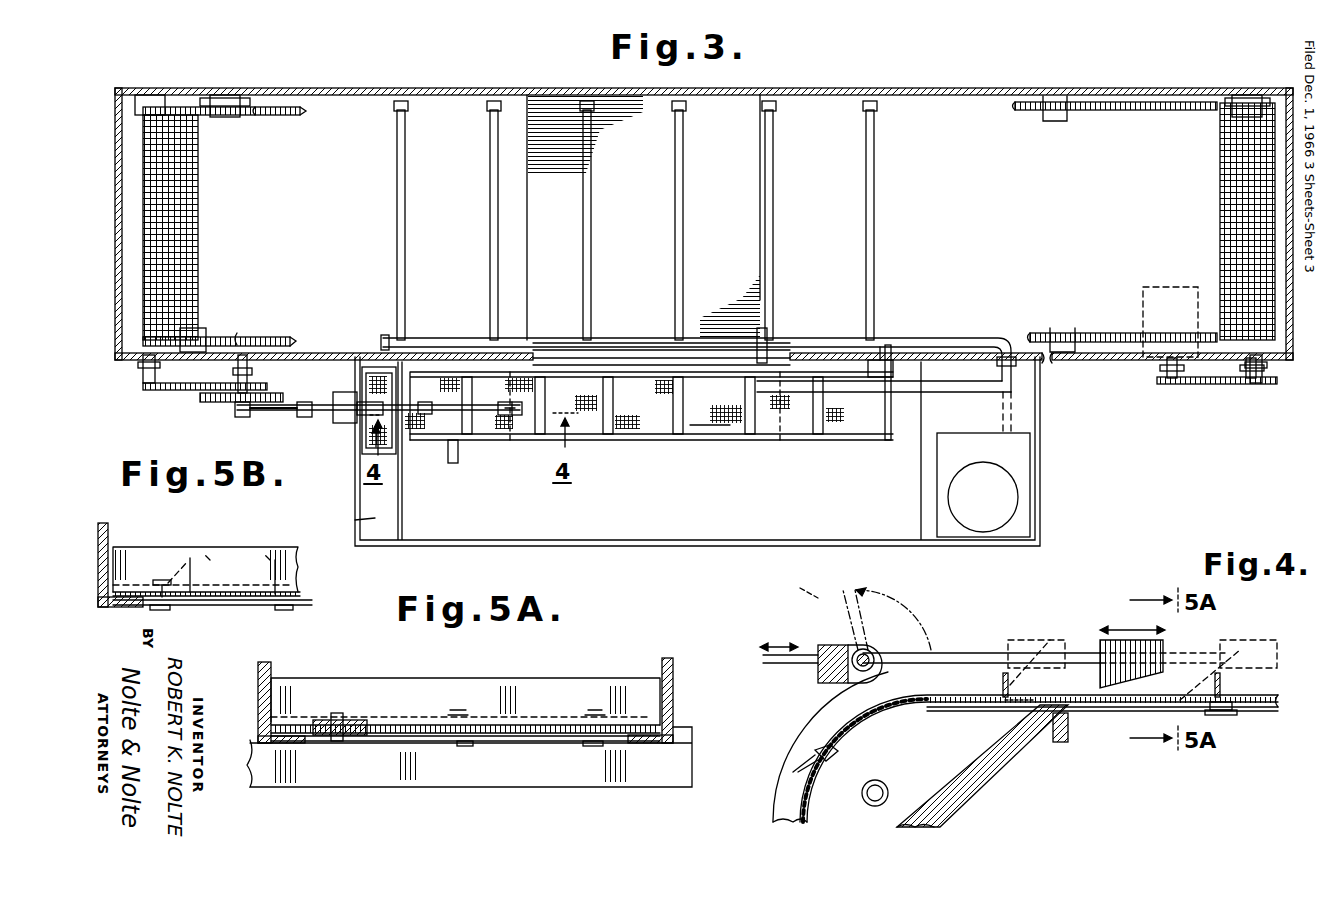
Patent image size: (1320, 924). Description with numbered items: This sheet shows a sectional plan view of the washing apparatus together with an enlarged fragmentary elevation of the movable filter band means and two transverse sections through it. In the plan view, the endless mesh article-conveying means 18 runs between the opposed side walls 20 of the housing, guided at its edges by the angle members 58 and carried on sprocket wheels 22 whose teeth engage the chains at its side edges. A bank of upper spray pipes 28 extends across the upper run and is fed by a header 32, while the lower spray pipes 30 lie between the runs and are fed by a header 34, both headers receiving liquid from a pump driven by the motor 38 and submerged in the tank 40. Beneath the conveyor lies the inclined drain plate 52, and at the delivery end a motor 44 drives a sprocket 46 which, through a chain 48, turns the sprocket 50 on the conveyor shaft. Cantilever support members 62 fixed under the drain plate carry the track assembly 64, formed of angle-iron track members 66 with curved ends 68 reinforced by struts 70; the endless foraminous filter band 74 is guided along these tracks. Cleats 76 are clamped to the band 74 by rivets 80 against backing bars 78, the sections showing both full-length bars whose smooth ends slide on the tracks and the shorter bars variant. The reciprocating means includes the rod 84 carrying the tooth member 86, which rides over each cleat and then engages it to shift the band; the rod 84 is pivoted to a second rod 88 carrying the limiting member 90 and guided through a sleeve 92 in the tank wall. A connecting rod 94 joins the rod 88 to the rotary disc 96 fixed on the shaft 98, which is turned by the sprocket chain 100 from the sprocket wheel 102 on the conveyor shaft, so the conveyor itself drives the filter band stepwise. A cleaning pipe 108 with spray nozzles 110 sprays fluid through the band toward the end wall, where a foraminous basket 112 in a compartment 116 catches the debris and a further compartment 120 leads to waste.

In FIG. 3, the article-conveying means 18 is at (170, 224).
In FIG. 3, the side wall 20 is at (938, 76).
In FIG. 3, the sprocket wheel 22 is at (145, 107).
In FIG. 3, the upper spray pipes 28 is at (490, 194).
In FIG. 3, the lower spray pipes 30 is at (758, 350).
In FIG. 3, the header 32 is at (943, 340).
In FIG. 3, the header 34 is at (988, 400).
In FIG. 3, the motor 38 is at (996, 498).
In FIG. 3, the tank 40 is at (358, 495).
In FIG. 3, the motor 44 is at (1178, 270).
In FIG. 3, the sprocket 46 is at (1166, 382).
In FIG. 3, the chain 48 is at (1207, 386).
In FIG. 3, the sprocket 50 is at (1275, 383).
In FIG. 3, the drain plate 52 is at (636, 348).
In FIG. 3, the angle members 58 is at (265, 115).
In FIG. 3, the support member 62 is at (505, 440).
In FIG. 5A, the support member 62 is at (560, 785).
In FIG. 4, the support member 62 is at (1070, 740).
In FIG. 3, the track assembly 64 is at (638, 454).
In FIG. 3, the track member 66 is at (442, 360).
In FIG. 5B, the track member 66 is at (106, 538).
In FIG. 5A, the track member 66 is at (267, 660).
In FIG. 4, the curved ends 68 is at (790, 762).
In FIG. 4, the strut 70 is at (955, 750).
In FIG. 3, the filter band 74 is at (720, 433).
In FIG. 5B, the filter band 74 is at (298, 598).
In FIG. 5A, the filter band 74 is at (398, 712).
In FIG. 4, the filter band 74 is at (927, 697).
In FIG. 3, the cleat 76 is at (543, 440).
In FIG. 5B, the cleat 76 is at (150, 551).
In FIG. 5A, the cleat 76 is at (535, 668).
In FIG. 4, the cleat 76 is at (790, 755).
In FIG. 5B, the backing bar 78 is at (310, 607).
In FIG. 5A, the backing bar 78 is at (373, 742).
In FIG. 4, the backing bar 78 is at (828, 745).
In FIG. 5B, the rivet 80 is at (201, 574).
In FIG. 5A, the rivet 80 is at (340, 713).
In FIG. 4, the rivet 80 is at (815, 740).
In FIG. 4, the rod 84 is at (1198, 636).
In FIG. 3, the tooth member 86 is at (510, 417).
In FIG. 4, the tooth member 86 is at (1053, 625).
In FIG. 3, the second rod 88 is at (337, 403).
In FIG. 4, the second rod 88 is at (763, 668).
In FIG. 3, the limiting member 90 is at (428, 441).
In FIG. 4, the limiting member 90 is at (875, 654).
In FIG. 3, the sleeve 92 is at (360, 418).
In FIG. 3, the connecting rod 94 is at (270, 420).
In FIG. 3, the rotary disc 96 is at (253, 408).
In FIG. 3, the rotary shaft 98 is at (240, 410).
In FIG. 3, the sprocket chain 100 is at (203, 390).
In FIG. 3, the sprocket wheel 102 is at (160, 390).
In FIG. 3, the pipe 108 is at (453, 463).
In FIG. 4, the pipe 108 is at (885, 806).
In FIG. 4, the spray nozzles 110 is at (862, 792).
In FIG. 3, the foraminous basket 112 is at (366, 450).
In FIG. 3, the compartment 116 is at (396, 523).
In FIG. 3, the compartment 120 is at (332, 415).